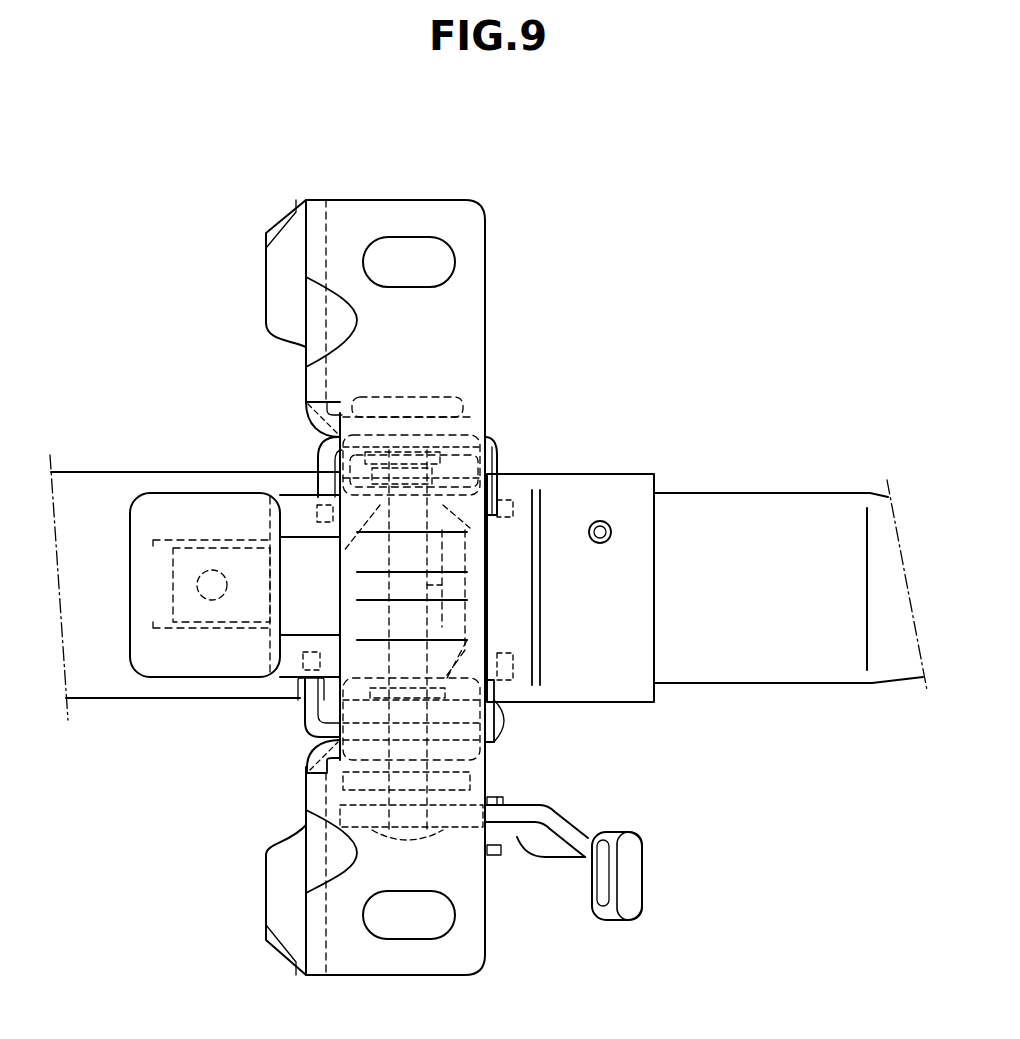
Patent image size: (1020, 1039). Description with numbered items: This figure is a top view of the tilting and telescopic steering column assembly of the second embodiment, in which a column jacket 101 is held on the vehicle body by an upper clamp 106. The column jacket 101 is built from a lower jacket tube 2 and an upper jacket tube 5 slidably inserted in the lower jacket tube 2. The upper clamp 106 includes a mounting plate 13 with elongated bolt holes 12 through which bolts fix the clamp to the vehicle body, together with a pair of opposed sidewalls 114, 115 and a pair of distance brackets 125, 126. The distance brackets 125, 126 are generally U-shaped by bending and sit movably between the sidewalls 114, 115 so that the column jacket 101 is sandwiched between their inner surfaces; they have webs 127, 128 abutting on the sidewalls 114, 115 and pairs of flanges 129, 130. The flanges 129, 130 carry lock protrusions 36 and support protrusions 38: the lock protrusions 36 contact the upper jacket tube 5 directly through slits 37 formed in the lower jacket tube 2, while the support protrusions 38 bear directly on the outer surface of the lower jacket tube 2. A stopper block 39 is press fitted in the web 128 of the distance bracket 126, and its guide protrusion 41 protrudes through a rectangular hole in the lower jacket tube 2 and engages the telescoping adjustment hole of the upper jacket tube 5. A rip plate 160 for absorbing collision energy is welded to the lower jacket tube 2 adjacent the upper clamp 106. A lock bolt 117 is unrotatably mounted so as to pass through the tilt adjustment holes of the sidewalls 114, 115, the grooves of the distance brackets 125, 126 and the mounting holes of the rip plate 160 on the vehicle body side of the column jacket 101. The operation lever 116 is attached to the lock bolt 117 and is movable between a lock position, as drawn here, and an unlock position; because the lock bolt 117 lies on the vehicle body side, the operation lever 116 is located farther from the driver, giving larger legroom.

The lower jacket tube 2 is at (113, 690).
The upper jacket tube 5 is at (709, 503).
The elongated bolt holes 12 is at (421, 240).
The mounting plate 13 is at (285, 893).
The lock protrusions 36 is at (303, 652).
The slits 37 is at (312, 690).
The support protrusions 38 is at (317, 512).
The stopper block 39 is at (423, 430).
The guide protrusion 41 is at (338, 556).
The column jacket 101 is at (770, 492).
The upper clamp 106 is at (495, 317).
The sidewall 114 is at (485, 748).
The sidewall 115 is at (490, 415).
The operation lever 116 is at (548, 847).
The lock bolt 117 is at (488, 588).
The distance bracket 125 is at (305, 745).
The distance bracket 126 is at (506, 452).
The web 127 is at (310, 790).
The web 128 is at (310, 403).
The flanges 129 is at (300, 696).
The flanges 130 is at (323, 485).
The rip plate 160 is at (127, 520).